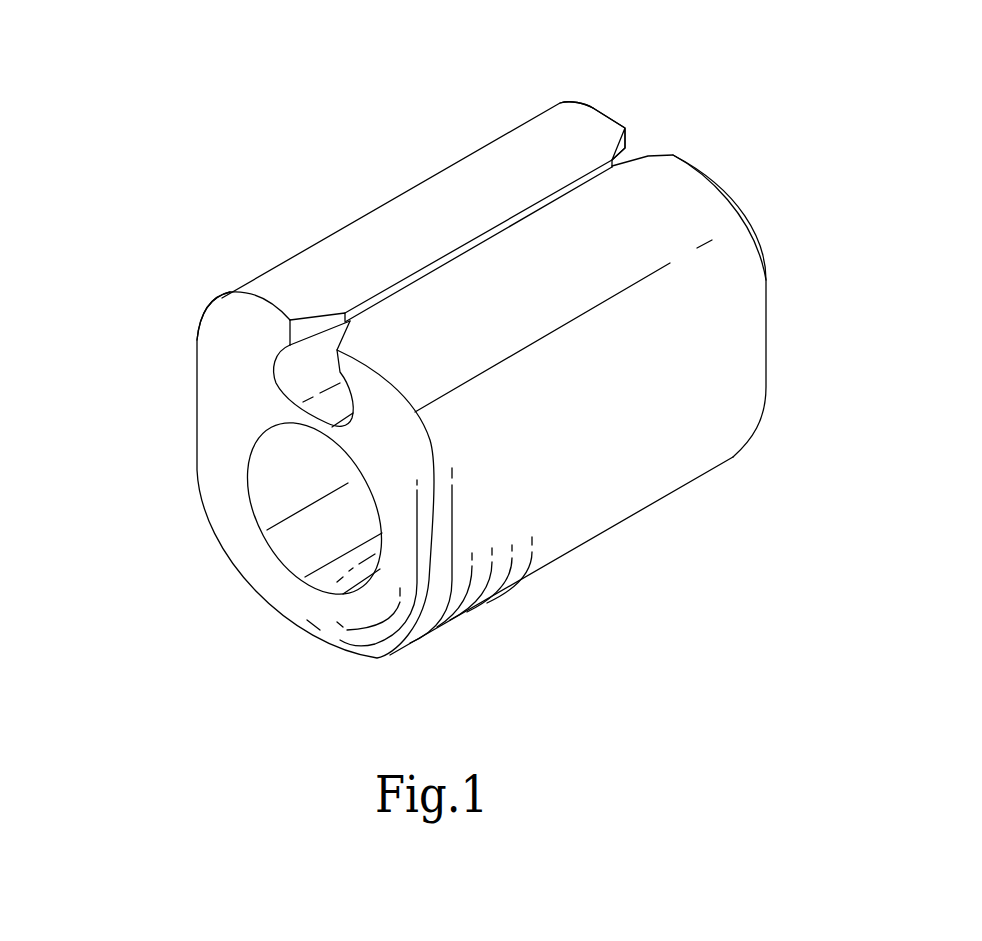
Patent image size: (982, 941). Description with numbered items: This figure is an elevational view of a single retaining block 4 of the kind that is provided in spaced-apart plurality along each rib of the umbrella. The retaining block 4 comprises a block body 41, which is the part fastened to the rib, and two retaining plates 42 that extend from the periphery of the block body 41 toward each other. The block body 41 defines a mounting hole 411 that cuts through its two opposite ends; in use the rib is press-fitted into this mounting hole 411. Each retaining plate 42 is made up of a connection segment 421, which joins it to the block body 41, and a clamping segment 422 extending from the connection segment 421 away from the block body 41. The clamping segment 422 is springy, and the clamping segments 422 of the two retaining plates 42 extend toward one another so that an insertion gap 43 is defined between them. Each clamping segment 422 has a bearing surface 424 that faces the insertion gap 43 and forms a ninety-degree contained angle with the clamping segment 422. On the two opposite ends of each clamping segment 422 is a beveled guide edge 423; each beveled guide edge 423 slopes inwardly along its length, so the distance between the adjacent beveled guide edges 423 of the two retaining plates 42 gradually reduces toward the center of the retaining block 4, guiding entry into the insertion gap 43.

The retaining block 4 is at (168, 448).
The block body 41 is at (563, 513).
The mounting hole 411 is at (290, 538).
The retaining plate 42 is at (352, 222).
The connection segment 421 is at (222, 370).
The clamping segment 422 is at (493, 182).
The beveled guide edge 423 is at (618, 148).
The bearing surface 424 is at (567, 183).
The insertion gap 43 is at (462, 245).